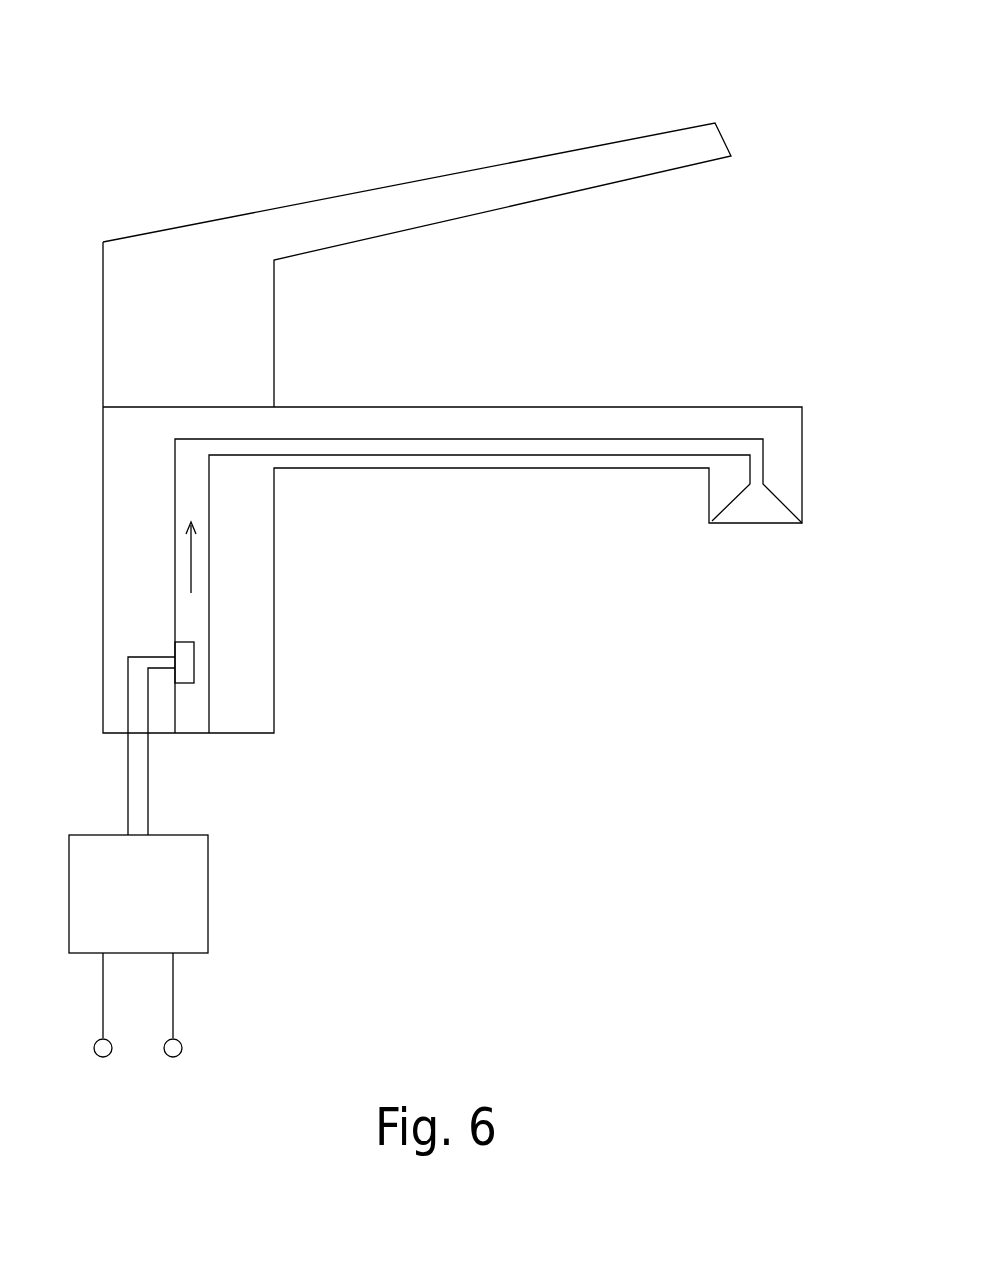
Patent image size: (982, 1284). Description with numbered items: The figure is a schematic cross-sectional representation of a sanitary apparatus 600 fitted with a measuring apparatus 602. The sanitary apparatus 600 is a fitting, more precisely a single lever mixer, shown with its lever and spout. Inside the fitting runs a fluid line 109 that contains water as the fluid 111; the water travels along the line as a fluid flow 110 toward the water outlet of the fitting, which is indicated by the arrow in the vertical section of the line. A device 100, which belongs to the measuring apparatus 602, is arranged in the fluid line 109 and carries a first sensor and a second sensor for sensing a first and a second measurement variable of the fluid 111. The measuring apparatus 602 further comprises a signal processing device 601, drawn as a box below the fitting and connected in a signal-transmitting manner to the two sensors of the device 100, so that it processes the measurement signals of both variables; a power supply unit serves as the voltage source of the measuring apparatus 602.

The sanitary apparatus 600 is at (458, 35).
The fluid line 109 is at (545, 450).
The fluid flow 110 is at (191, 560).
The fluid 111 is at (197, 608).
The device 100 is at (185, 660).
The signal processing device 601 is at (209, 896).
The measuring apparatus 602 is at (236, 807).